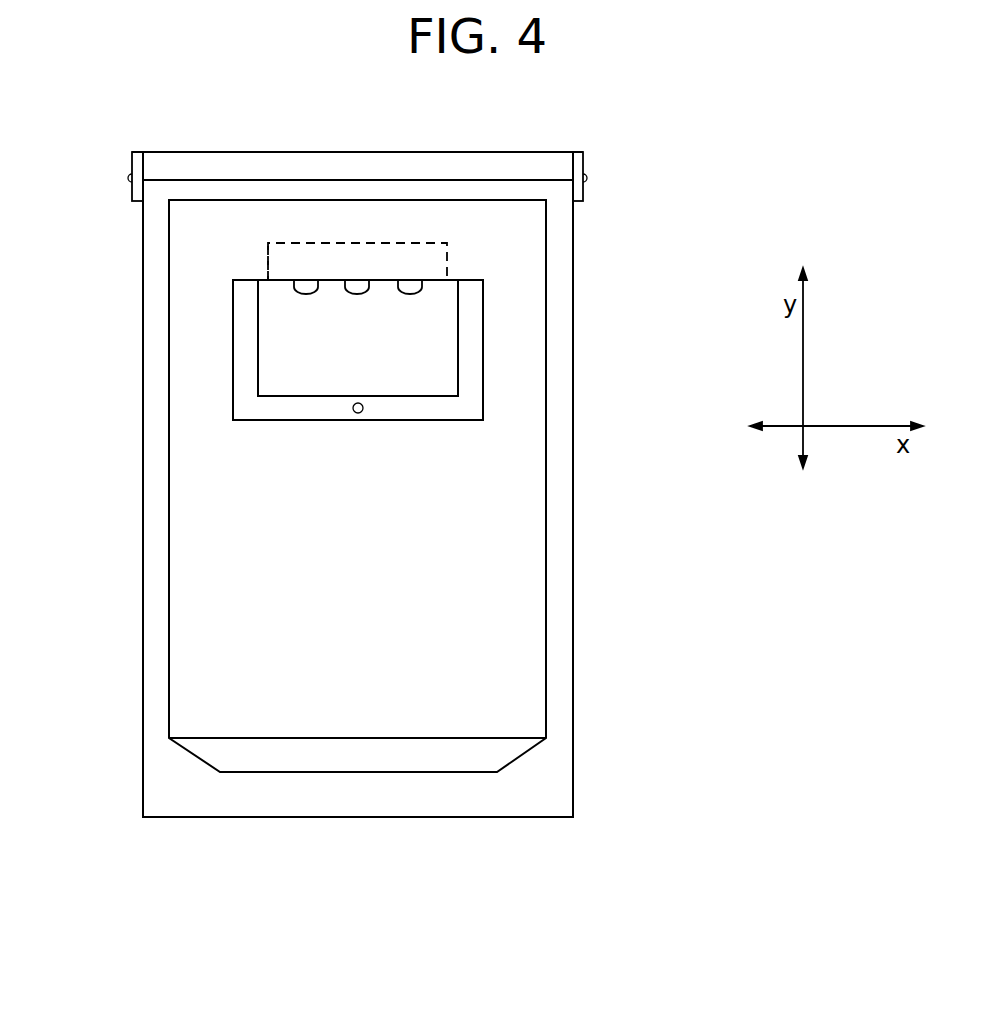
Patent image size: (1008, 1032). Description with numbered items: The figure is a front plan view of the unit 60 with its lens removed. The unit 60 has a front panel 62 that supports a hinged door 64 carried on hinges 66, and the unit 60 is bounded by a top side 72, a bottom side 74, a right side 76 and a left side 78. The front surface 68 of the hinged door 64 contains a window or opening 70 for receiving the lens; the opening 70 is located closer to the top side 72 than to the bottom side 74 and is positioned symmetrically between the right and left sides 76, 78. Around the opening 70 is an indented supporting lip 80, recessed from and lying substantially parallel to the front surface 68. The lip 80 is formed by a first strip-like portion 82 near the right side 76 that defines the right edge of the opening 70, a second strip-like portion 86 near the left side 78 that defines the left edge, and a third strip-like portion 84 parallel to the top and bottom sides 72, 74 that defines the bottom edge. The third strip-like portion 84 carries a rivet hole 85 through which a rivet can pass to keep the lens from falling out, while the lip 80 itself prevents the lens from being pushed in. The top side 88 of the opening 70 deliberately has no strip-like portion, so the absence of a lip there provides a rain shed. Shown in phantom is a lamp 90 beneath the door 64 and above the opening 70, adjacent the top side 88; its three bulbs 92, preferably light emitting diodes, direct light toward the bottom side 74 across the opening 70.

The unit 60 is at (128, 530).
The front panel 62 is at (557, 520).
The hinged door 64 is at (522, 620).
The hinges 66 is at (134, 163).
The front surface 68 is at (333, 646).
The opening 70 is at (338, 365).
The top side 72 is at (356, 150).
The bottom side 74 is at (462, 817).
The right side 76 is at (573, 378).
The left side 78 is at (143, 447).
The indented supporting lip 80 is at (268, 414).
The first strip-like portion 82 is at (471, 360).
The third strip-like portion 84 is at (410, 410).
The rivet hole 85 is at (354, 413).
The second strip-like portion 86 is at (243, 369).
The top side of the opening 88 is at (263, 280).
The lamp 90 is at (421, 263).
The bulbs 92 is at (411, 287).